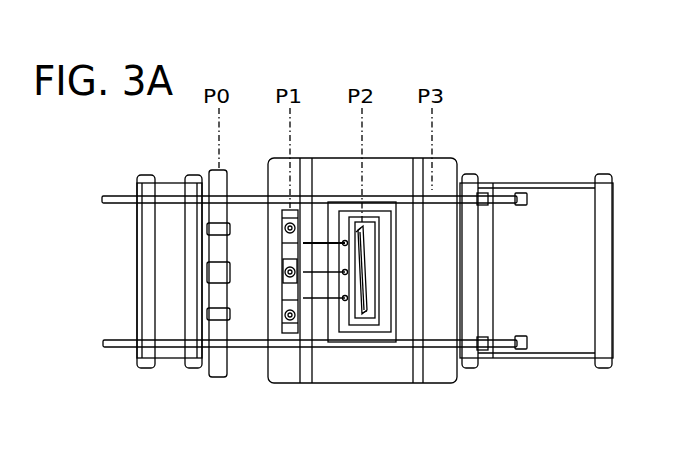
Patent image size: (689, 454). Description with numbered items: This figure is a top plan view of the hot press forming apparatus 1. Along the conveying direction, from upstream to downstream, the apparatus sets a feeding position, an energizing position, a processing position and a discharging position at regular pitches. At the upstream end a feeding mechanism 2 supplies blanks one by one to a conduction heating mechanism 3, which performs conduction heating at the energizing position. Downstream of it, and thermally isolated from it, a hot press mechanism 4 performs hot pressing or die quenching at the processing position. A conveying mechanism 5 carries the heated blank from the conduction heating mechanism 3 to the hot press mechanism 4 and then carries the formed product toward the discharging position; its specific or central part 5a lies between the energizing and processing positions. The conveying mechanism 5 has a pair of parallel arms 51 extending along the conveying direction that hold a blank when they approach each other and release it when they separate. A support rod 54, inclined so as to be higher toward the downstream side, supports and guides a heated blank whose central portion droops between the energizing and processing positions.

The hot press forming apparatus 1 is at (569, 132).
The feeding mechanism 2 is at (162, 352).
The conduction heating mechanism 3 is at (288, 334).
The hot press mechanism 4 is at (360, 325).
The conveying mechanism 5 is at (440, 347).
The specific part of conveying mechanism 5a is at (368, 80).
The pair of parallel arms 51 is at (113, 203).
The support rod 54 is at (315, 305).